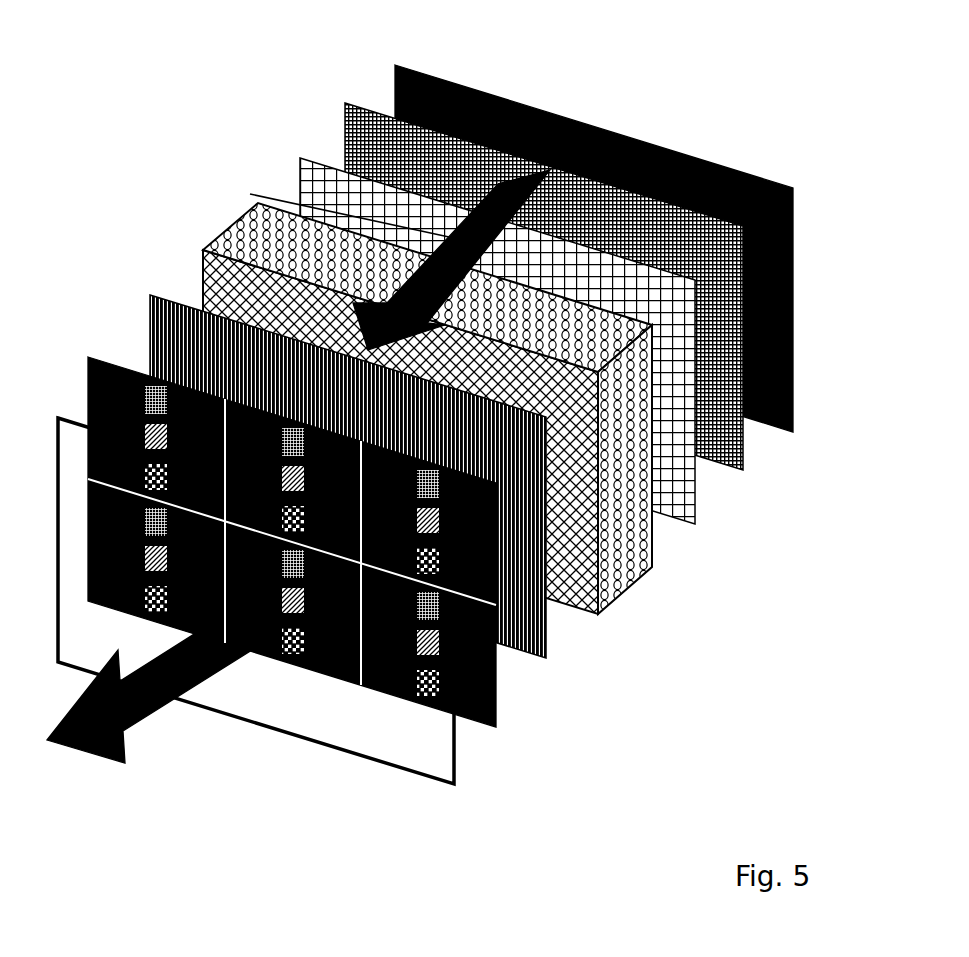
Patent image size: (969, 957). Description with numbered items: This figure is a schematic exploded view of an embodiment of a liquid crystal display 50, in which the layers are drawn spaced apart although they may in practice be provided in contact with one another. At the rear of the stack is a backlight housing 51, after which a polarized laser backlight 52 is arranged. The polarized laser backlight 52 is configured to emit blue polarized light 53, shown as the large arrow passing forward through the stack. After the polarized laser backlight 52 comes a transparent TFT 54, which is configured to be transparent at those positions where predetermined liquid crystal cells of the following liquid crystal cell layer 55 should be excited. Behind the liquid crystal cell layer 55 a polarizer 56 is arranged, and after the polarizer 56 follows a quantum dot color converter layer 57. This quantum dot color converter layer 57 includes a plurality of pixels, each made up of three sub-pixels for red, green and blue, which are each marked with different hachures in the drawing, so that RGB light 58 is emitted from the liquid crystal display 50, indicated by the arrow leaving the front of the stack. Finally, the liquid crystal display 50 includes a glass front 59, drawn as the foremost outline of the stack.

The liquid crystal display 50 is at (345, 60).
The backlight housing 51 is at (568, 120).
The polarized laser backlight 52 is at (350, 140).
The blue polarized light 53 is at (250, 194).
The transparent TFT 54 is at (697, 492).
The liquid crystal cell layer 55 is at (627, 591).
The polarizer 56 is at (538, 657).
The quantum dot color converter layer 57 is at (500, 713).
The RGB light 58 is at (68, 743).
The glass front 59 is at (59, 418).